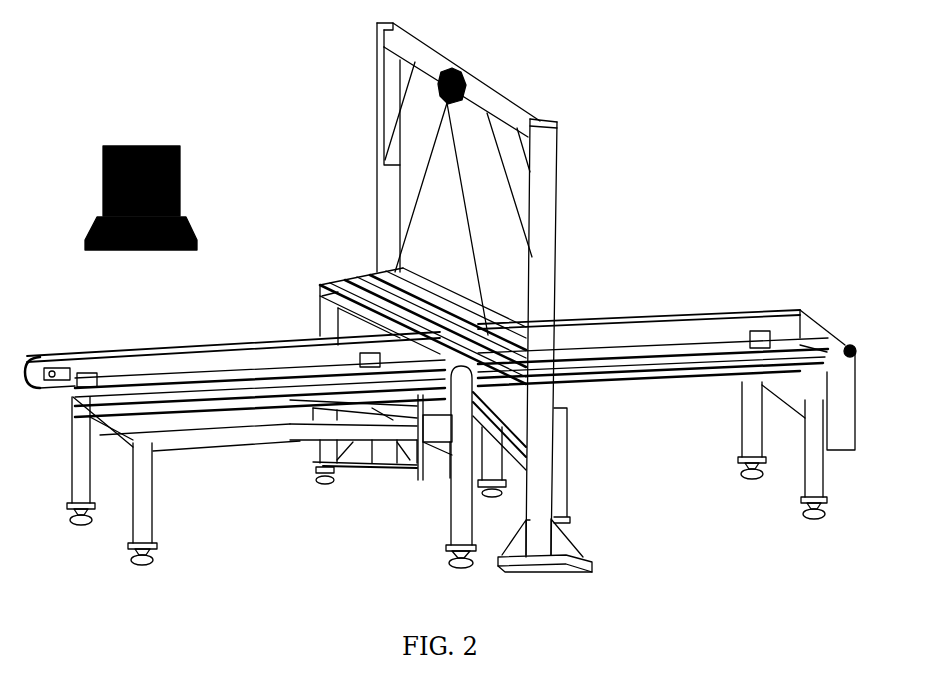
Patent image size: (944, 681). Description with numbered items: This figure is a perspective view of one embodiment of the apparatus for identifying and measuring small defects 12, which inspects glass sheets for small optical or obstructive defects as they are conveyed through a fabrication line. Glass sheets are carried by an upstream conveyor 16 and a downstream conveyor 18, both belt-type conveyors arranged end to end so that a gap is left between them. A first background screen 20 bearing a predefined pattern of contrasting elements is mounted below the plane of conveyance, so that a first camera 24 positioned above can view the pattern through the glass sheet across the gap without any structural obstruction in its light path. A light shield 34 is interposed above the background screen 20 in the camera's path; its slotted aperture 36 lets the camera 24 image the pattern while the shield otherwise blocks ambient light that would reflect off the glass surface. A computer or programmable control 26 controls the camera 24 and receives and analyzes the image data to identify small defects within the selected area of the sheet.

The apparatus for identifying and measuring small defects 12 is at (211, 79).
The upstream conveyor 16 is at (163, 348).
The downstream conveyor 18 is at (742, 310).
The first background screen 20 is at (472, 448).
The first camera 24 is at (462, 91).
The computer and/or programmable control 26 is at (144, 146).
The light shield 34 is at (360, 272).
The slotted aperture 36 is at (393, 272).